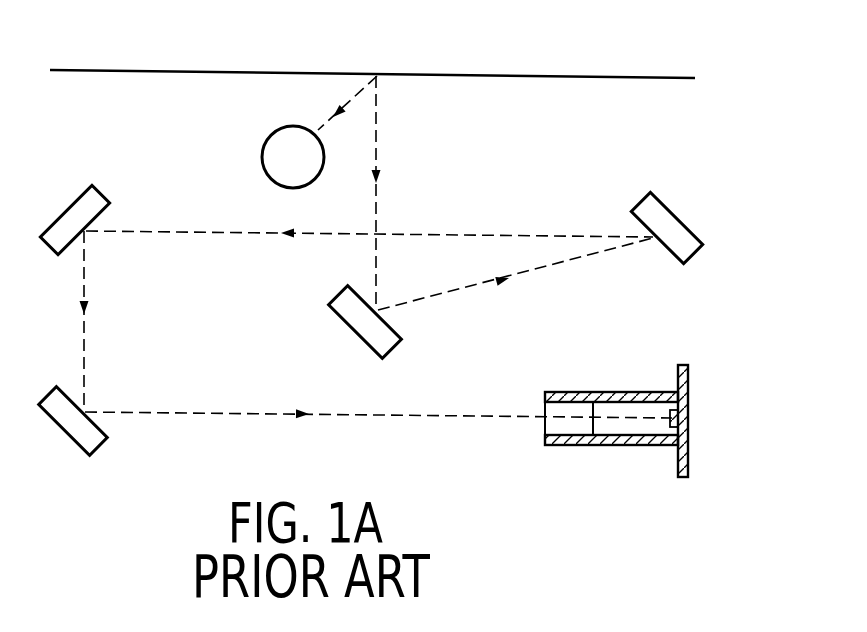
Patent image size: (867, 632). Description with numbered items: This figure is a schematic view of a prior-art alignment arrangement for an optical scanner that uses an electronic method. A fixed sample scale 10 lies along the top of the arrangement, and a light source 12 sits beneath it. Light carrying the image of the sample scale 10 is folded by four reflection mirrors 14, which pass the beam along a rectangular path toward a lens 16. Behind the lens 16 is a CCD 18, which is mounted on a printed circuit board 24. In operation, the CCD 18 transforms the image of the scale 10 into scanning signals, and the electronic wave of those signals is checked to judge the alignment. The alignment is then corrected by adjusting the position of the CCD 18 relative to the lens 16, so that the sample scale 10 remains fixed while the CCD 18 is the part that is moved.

The sample scale 10 is at (596, 78).
The light source 12 is at (268, 157).
The reflection mirrors 14 is at (355, 322).
The lens 16 is at (548, 425).
The CCD 18 is at (670, 422).
The printed circuit board 24 is at (678, 477).